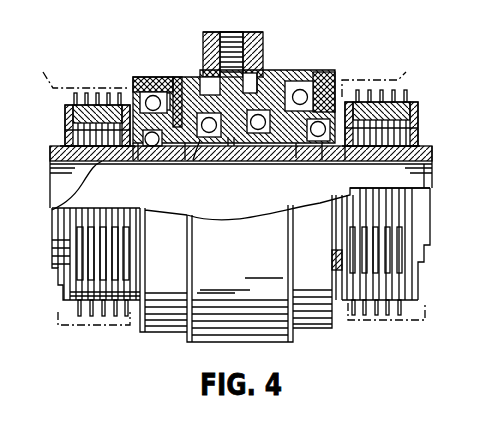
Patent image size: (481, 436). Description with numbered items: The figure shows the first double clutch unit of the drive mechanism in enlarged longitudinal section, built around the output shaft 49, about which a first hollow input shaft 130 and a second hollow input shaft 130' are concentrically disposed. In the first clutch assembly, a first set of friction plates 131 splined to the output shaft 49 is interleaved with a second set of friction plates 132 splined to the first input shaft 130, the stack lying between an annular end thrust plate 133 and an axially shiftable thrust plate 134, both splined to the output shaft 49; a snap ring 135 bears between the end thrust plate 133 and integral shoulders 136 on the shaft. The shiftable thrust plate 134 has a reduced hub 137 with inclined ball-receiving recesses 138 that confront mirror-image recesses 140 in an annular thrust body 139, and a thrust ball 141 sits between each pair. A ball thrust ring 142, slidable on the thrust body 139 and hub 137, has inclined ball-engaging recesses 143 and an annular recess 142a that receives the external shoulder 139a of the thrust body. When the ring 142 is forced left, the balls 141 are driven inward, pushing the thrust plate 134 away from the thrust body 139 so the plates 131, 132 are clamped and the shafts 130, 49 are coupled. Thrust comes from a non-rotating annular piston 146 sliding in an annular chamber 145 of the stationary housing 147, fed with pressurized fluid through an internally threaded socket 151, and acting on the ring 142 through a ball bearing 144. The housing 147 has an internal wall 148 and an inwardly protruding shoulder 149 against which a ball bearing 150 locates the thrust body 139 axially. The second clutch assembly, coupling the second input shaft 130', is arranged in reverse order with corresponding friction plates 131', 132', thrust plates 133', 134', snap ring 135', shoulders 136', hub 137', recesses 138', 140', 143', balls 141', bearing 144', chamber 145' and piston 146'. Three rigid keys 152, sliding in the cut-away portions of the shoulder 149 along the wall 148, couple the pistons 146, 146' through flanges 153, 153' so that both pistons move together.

The output shaft 49 is at (52, 209).
The first hollow input shaft 130 is at (85, 73).
The second hollow input shaft 130' is at (386, 78).
The first set of friction plates 131 is at (227, 177).
The first set of friction plates of second clutch assembly 131' is at (412, 162).
The second set of friction plates 132 is at (100, 81).
The second set of friction plates of second clutch assembly 132' is at (409, 84).
The annular end thrust plate 133 is at (75, 122).
The annular end thrust plate of second clutch assembly 133' is at (403, 119).
The axially shiftable thrust plate 134 is at (230, 89).
The axially shiftable thrust plate of second clutch assembly 134' is at (390, 176).
The snap ring 135 is at (75, 130).
The snap ring of second clutch assembly 135' is at (403, 118).
The integral shoulders 136 is at (77, 149).
The integral shoulders of second clutch assembly 136' is at (402, 138).
The annular hub 137 is at (148, 144).
The annular hub of second clutch assembly 137' is at (356, 159).
The ball-receiving recesses 138 is at (114, 242).
The ball-receiving recesses of second clutch assembly 138' is at (376, 242).
The annular thrust body 139 is at (265, 158).
The annular external shoulder 139a is at (193, 270).
The ball-receiving open recesses 140 is at (164, 241).
The ball-receiving open recesses of second clutch assembly 140' is at (316, 235).
The thrust ball 141 is at (166, 185).
The thrust ball of second clutch assembly 141' is at (331, 158).
The ball thrust ring 142 is at (311, 133).
The annular recess 142a is at (205, 162).
The ball-engaging recesses 143 is at (123, 160).
The ball-engaging recesses of second clutch assembly 143' is at (341, 120).
The ball bearing 144 is at (153, 72).
The ball bearing of second clutch assembly 144' is at (340, 78).
The annular chamber 145 is at (237, 40).
The second annular housing chamber 145' is at (274, 58).
The annular piston 146 is at (174, 75).
The annular piston of second clutch assembly 146' is at (309, 78).
The stationary annular housing 147 is at (216, 73).
The annular internal wall 148 is at (240, 140).
The radially inwardly protruding shoulder 149 is at (210, 163).
The ball bearing 150 is at (255, 165).
The internally threaded socket 151 is at (248, 37).
The rigid key 152 is at (230, 150).
The radial flange 153 is at (210, 68).
The radial flange of second clutch assembly 153' is at (279, 67).